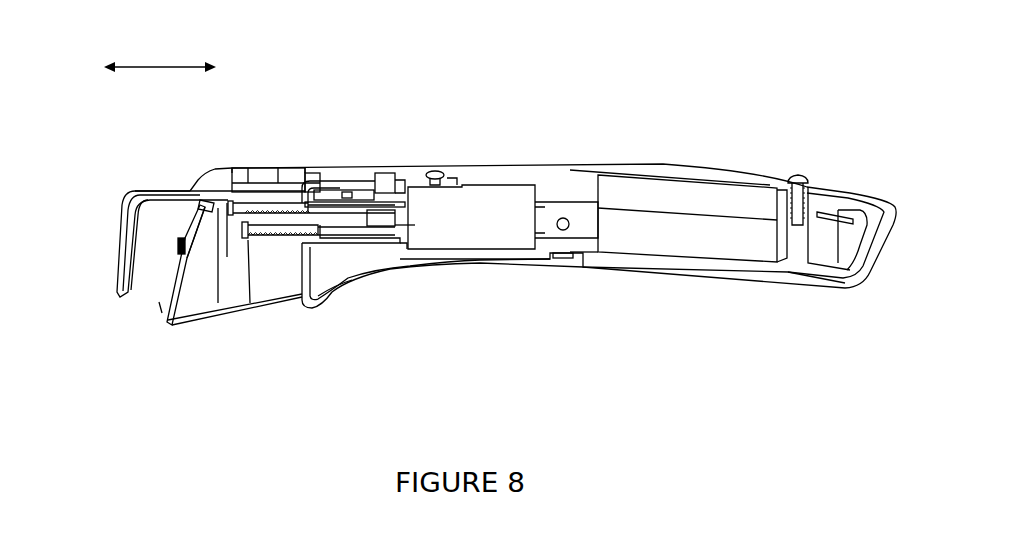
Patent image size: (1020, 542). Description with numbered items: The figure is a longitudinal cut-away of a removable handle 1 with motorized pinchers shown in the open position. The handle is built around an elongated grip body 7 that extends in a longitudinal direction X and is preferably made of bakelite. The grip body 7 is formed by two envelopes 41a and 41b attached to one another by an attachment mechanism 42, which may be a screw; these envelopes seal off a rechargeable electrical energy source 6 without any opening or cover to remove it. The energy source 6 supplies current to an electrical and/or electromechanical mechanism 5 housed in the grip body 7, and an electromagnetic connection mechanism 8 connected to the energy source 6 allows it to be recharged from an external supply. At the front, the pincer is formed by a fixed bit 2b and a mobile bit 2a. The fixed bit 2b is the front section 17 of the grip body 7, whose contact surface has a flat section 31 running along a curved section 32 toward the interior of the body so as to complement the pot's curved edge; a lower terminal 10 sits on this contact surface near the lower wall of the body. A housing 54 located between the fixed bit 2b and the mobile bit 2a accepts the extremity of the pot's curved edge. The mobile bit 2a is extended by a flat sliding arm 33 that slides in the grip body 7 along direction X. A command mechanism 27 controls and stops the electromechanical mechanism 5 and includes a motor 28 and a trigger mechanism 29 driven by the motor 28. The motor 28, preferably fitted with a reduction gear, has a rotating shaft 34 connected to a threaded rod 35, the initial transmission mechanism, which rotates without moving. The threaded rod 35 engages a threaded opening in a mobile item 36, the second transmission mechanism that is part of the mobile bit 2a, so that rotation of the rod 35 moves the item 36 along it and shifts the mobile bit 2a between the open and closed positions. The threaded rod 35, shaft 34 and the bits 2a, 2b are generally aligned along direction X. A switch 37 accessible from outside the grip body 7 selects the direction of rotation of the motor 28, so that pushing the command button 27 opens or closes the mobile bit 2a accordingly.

The removable handle 1 is at (533, 116).
The mobile bit 2a is at (120, 243).
The fixed bit 2b is at (157, 297).
The electrical and/or electromechanical mechanism 5 is at (322, 116).
The rechargeable electrical energy source 6 is at (703, 256).
The grip body 7 is at (815, 279).
The electromagnetic connection mechanism 8 is at (192, 258).
The lower terminal 10 is at (178, 246).
The front section 17 is at (170, 273).
The command mechanism 27 is at (413, 274).
The motor 28 is at (477, 242).
The trigger mechanism 29 is at (278, 155).
The flat section 31 is at (158, 309).
The curved section 32 is at (203, 200).
The sliding arm 33 is at (224, 193).
The shaft 34 is at (370, 216).
The threaded rod 35 is at (267, 220).
The mobile item 36 is at (278, 202).
The switch 37 is at (378, 166).
The envelope 41a is at (700, 172).
The envelope 41b is at (840, 286).
The attachment mechanism 42 is at (795, 177).
The housing 54 is at (212, 205).
The longitudinal direction X is at (133, 67).